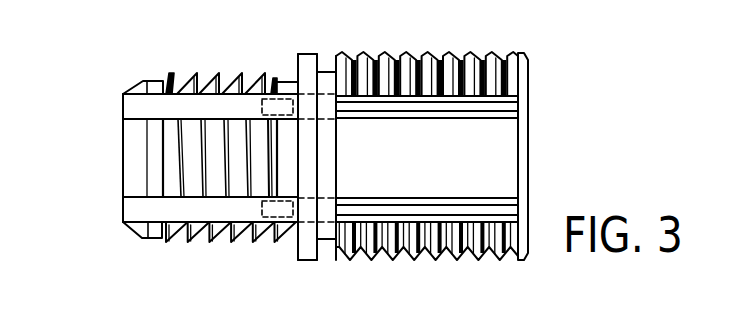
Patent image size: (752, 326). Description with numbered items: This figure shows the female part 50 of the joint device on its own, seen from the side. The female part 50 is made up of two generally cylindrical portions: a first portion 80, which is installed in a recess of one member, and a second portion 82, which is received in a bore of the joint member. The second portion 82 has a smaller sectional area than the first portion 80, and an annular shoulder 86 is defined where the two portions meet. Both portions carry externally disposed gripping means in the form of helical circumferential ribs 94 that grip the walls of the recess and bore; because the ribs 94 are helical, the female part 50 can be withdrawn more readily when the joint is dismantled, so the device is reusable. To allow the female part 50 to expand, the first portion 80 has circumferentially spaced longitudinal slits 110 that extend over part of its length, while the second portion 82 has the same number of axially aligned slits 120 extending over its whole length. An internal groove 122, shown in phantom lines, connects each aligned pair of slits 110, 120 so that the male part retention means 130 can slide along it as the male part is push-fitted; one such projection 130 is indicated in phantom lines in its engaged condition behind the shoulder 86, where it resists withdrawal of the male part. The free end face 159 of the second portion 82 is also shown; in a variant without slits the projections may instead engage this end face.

The female part 50 is at (312, 272).
The first portion 80 is at (492, 62).
The second portion 82 is at (165, 88).
The annular shoulder 86 is at (297, 68).
The helical circumferential ribs 94 is at (188, 82).
The slits 110 is at (513, 107).
The slits 120 is at (130, 108).
The internal groove 122 is at (297, 214).
The male part retention means 130 is at (268, 97).
The free end face 159 is at (123, 95).